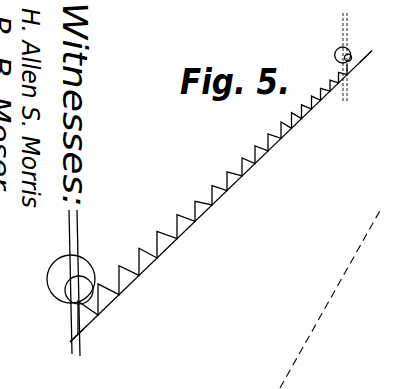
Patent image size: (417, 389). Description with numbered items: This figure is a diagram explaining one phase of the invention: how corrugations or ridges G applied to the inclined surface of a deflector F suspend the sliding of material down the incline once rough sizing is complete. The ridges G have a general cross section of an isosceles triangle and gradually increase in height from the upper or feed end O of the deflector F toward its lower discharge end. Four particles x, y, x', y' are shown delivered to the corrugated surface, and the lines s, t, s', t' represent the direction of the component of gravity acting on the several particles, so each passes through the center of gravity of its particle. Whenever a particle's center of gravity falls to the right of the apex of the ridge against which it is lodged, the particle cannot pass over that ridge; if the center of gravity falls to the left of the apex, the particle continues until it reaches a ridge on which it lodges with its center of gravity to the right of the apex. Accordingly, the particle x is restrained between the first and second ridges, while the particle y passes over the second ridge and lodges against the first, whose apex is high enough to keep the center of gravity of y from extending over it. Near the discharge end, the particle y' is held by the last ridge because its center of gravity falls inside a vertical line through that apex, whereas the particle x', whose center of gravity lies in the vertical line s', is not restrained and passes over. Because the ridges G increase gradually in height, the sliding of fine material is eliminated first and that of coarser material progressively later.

The deflector F is at (229, 190).
The corrugations or ridges G is at (240, 163).
The upper or feed end O is at (221, 197).
The line of gravity component s is at (332, 56).
The line of gravity component t is at (355, 56).
The particle x is at (359, 45).
The particle y is at (330, 48).
The vertical line of gravity component s' is at (60, 282).
The line of gravity component t' is at (86, 283).
The particle x' is at (58, 273).
The particle y' is at (89, 269).